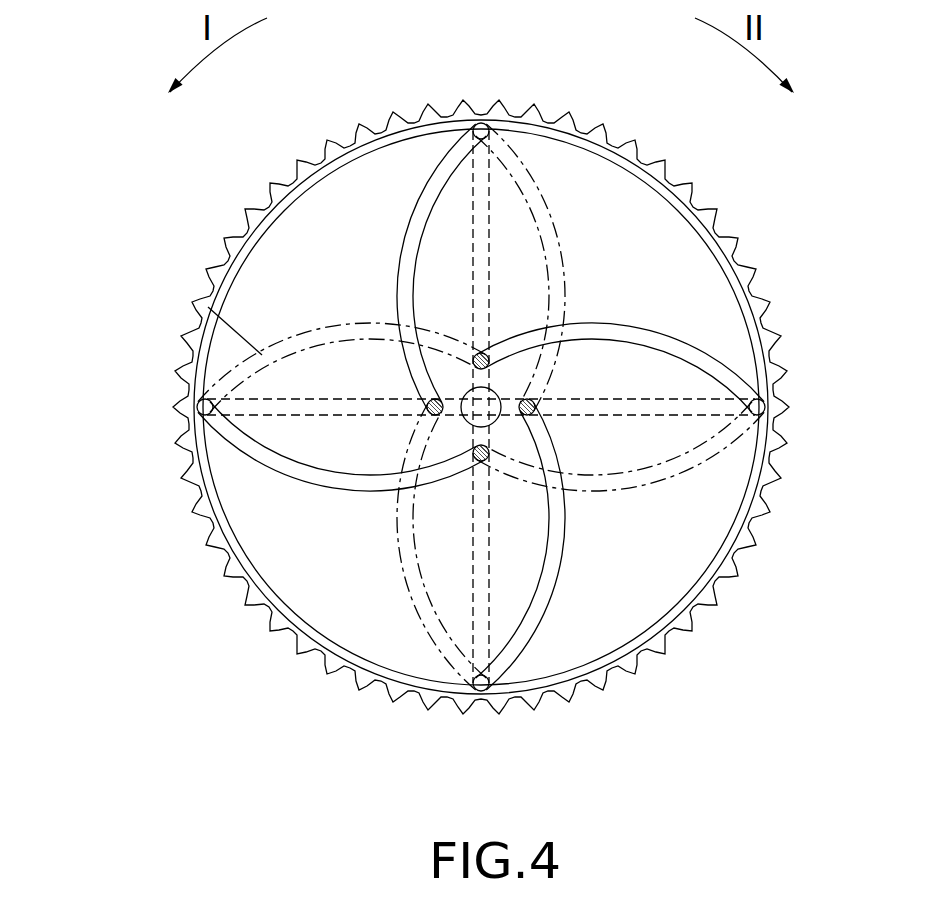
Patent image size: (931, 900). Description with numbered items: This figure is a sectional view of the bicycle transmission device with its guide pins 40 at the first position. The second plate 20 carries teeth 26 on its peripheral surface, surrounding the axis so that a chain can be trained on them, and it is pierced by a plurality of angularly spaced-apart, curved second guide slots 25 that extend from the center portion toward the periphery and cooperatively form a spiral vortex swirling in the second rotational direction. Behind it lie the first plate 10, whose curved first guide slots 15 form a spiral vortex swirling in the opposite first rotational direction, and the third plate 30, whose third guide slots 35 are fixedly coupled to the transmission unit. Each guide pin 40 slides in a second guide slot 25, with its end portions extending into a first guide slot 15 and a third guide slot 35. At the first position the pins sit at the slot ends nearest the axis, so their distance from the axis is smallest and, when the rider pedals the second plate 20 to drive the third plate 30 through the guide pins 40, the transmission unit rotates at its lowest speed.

The first plate 10 is at (367, 188).
The third plate 30 is at (481, 407).
The first guide slots 15 is at (193, 280).
The second plate 20 is at (258, 638).
The second guide slots 25 is at (175, 477).
The teeth 26 is at (175, 368).
The third guide slots 35 is at (333, 403).
The guide pins 40 is at (428, 413).